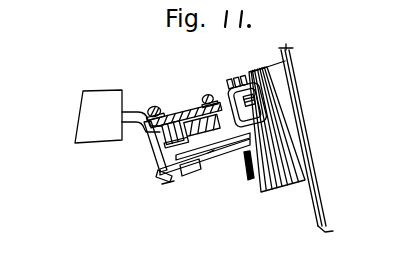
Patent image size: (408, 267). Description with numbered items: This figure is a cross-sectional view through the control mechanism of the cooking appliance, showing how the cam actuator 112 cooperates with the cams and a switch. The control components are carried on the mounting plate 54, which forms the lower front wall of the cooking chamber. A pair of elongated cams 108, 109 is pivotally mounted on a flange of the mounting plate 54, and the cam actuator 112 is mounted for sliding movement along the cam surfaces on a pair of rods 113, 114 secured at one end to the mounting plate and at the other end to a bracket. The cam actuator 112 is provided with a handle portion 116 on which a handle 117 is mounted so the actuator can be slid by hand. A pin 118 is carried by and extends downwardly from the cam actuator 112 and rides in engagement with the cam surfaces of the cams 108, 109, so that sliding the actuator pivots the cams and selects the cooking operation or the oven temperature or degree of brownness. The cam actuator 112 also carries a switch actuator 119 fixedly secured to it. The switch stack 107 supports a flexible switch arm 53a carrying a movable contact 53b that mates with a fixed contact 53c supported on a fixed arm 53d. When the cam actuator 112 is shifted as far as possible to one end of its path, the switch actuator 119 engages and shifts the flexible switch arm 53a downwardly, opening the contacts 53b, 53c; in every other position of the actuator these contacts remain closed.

The mounting plate 54 is at (289, 53).
The switch stack 107 is at (294, 178).
The cam 108 is at (214, 150).
The cam 109 is at (268, 114).
The cam actuator 112 is at (180, 107).
The rod 113 is at (146, 108).
The rod 114 is at (216, 90).
The handle portion 116 is at (132, 112).
The handle 117 is at (88, 104).
The pin 118 is at (159, 135).
The switch actuator 119 is at (163, 186).
The flexible switch arm 53a is at (165, 188).
The movable contact 53b is at (214, 156).
The fixed contact 53c is at (177, 160).
The fixed arm 53d is at (223, 146).